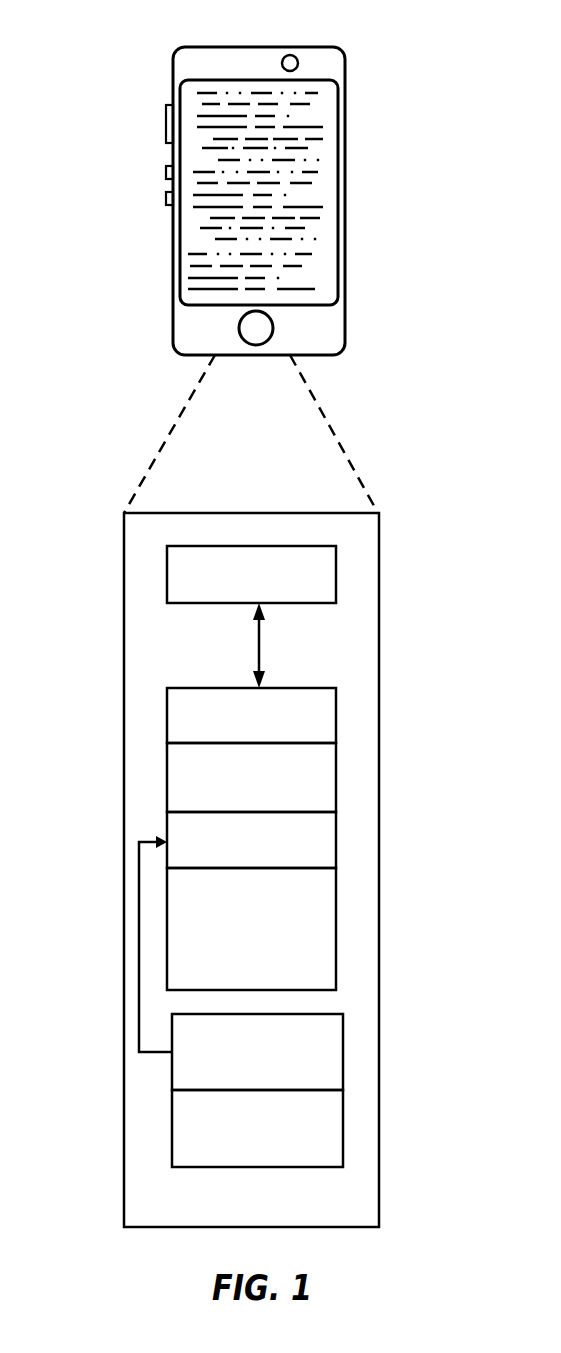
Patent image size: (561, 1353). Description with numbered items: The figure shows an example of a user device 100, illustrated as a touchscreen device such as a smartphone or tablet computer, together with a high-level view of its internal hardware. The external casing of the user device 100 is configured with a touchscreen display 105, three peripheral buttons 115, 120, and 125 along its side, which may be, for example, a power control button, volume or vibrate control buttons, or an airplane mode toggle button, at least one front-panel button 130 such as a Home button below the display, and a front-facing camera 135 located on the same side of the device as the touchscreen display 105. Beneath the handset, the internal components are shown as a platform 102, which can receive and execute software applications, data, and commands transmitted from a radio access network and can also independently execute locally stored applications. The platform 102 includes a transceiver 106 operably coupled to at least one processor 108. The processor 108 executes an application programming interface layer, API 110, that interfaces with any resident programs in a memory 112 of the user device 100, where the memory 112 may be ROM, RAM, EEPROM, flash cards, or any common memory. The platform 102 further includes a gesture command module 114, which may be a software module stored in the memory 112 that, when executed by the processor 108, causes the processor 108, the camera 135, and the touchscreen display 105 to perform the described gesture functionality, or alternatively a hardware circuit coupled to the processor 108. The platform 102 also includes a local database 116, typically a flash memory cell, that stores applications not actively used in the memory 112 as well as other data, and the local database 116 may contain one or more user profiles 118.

The user device 100 is at (235, 47).
The platform 102 is at (124, 620).
The touchscreen display 105 is at (338, 103).
The transceiver 106 is at (336, 572).
The processor 108 is at (336, 715).
The application programming interface (API) 110 is at (336, 777).
The memory 112 is at (336, 840).
The gesture command module 114 is at (336, 930).
The peripheral button 115 is at (165, 124).
The local database 116 is at (343, 1048).
The user profiles 118 is at (343, 1130).
The peripheral button 120 is at (165, 172).
The peripheral button 125 is at (165, 198).
The front-panel button 130 is at (239, 329).
The camera 135 is at (299, 63).